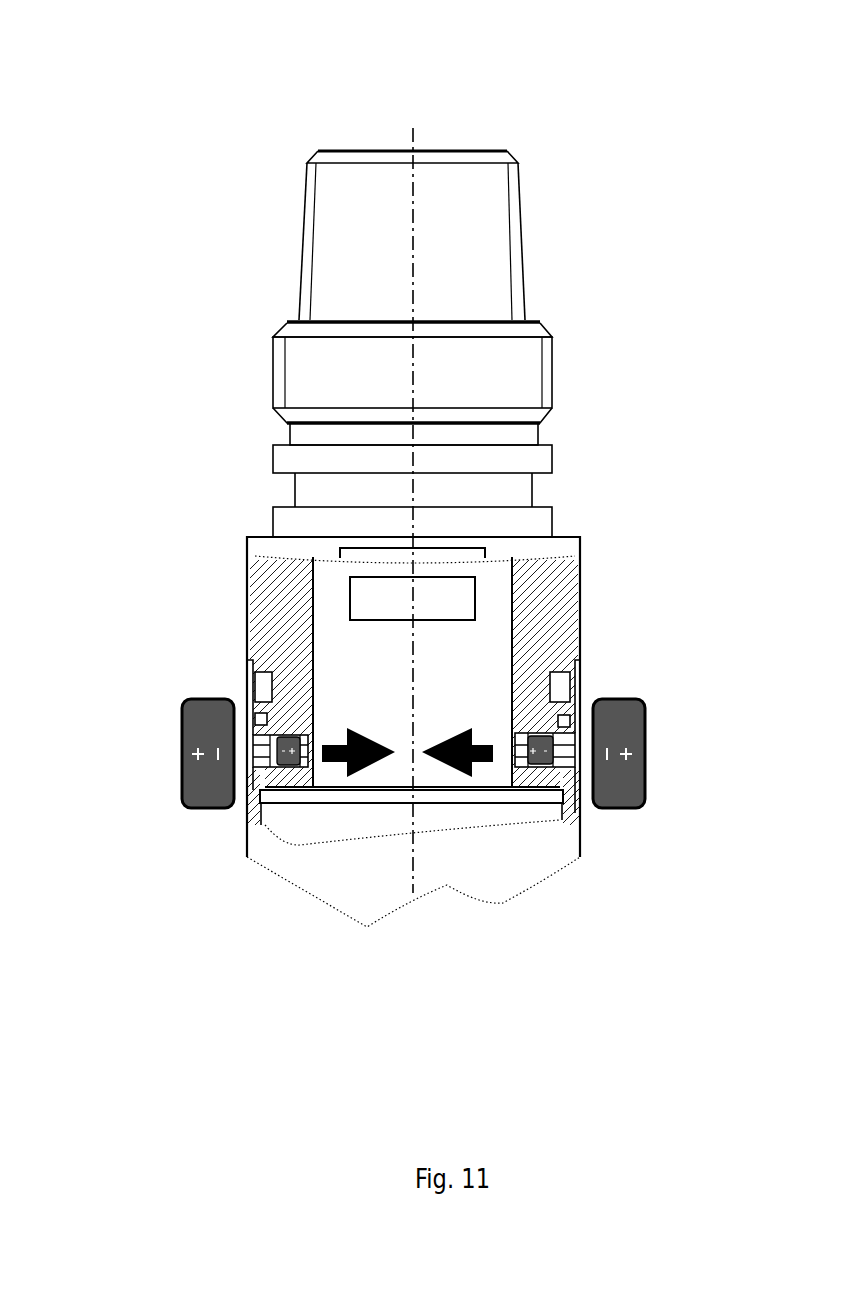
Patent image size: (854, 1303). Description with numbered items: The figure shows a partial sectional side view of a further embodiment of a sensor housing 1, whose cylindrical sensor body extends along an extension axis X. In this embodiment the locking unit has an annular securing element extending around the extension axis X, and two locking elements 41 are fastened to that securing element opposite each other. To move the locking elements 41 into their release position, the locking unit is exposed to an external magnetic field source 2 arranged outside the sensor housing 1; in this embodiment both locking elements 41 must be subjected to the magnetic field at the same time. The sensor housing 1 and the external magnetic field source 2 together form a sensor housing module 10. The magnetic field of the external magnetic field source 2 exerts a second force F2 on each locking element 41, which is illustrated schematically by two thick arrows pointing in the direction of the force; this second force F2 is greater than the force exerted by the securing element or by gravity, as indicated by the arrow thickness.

The sensor housing 1 is at (118, 220).
The extension axis X is at (413, 142).
The sensor housing module 10 is at (683, 285).
The locking element 41 is at (298, 706).
The external magnetic field source 2 is at (216, 812).
The second force F2 is at (357, 770).